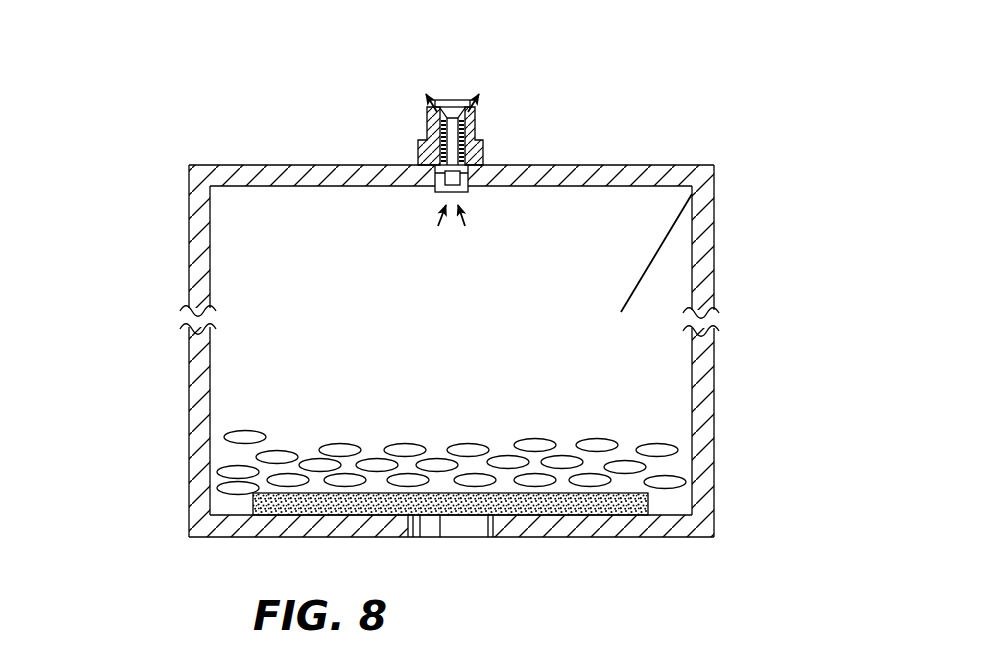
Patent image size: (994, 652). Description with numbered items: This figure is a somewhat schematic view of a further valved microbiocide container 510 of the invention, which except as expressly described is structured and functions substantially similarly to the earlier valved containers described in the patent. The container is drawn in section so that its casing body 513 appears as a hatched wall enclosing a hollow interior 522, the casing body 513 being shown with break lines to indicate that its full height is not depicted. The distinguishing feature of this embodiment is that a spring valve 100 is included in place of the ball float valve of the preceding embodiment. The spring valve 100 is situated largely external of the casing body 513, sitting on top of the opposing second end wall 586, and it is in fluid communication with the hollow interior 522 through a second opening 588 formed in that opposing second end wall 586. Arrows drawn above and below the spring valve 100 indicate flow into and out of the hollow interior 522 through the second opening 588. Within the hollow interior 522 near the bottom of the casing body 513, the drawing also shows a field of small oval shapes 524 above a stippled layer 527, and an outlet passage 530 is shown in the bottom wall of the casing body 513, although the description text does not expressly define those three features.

The spring valve 100 is at (400, 138).
The valved container 510 is at (160, 370).
The casing body 513 is at (703, 282).
The hollow interior 522 is at (693, 192).
The droplets 524 is at (220, 489).
The filter layer 527 is at (648, 505).
The drain 530 is at (478, 533).
The opposing second end wall 586 is at (595, 175).
The second opening 588 is at (468, 178).